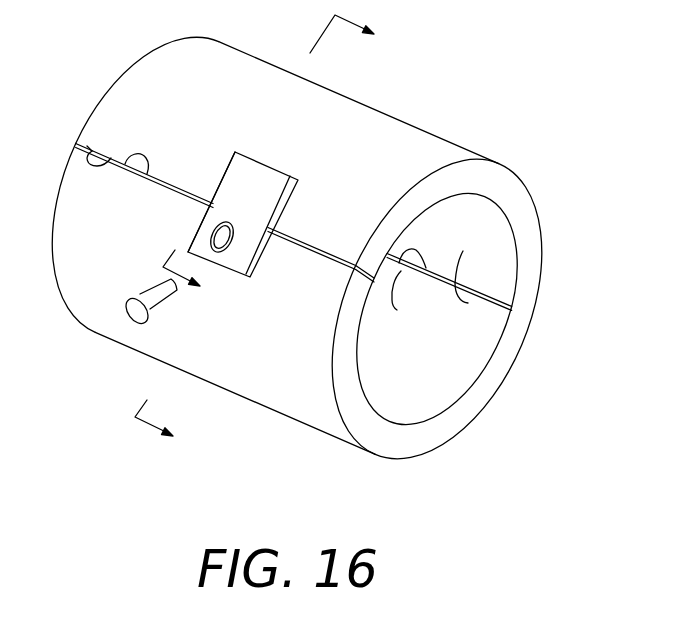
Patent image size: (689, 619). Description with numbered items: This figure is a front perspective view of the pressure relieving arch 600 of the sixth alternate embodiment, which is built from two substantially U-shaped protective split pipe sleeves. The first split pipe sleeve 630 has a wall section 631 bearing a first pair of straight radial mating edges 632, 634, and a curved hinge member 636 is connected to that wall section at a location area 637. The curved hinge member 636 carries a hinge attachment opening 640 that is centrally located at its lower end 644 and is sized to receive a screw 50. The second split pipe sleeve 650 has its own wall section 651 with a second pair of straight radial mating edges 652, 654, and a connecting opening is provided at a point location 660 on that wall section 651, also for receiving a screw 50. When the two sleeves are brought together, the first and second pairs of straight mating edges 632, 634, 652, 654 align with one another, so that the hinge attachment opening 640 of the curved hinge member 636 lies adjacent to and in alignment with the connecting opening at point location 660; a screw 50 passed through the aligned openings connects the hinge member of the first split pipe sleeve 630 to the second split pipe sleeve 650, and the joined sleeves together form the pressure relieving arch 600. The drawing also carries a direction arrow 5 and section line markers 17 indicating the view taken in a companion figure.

The pressure relieving arch 600 is at (325, 259).
The first split pipe sleeve 630 is at (287, 118).
The wall section 631 is at (312, 163).
The straight mating edge 632 is at (87, 146).
The straight mating edge 634 is at (465, 247).
The curved hinge member 636 is at (222, 216).
The location area 637 is at (263, 164).
The hinge attachment opening 640 is at (225, 220).
The lower end 644 is at (194, 233).
The second split pipe sleeve 650 is at (317, 316).
The wall section 651 is at (303, 410).
The straight mating edge 652 is at (147, 176).
The straight mating edge 654 is at (447, 298).
The point location 660 is at (237, 272).
The screw 50 is at (140, 293).
The direction arrow 5 is at (191, 278).
The section line 17 is at (269, 235).